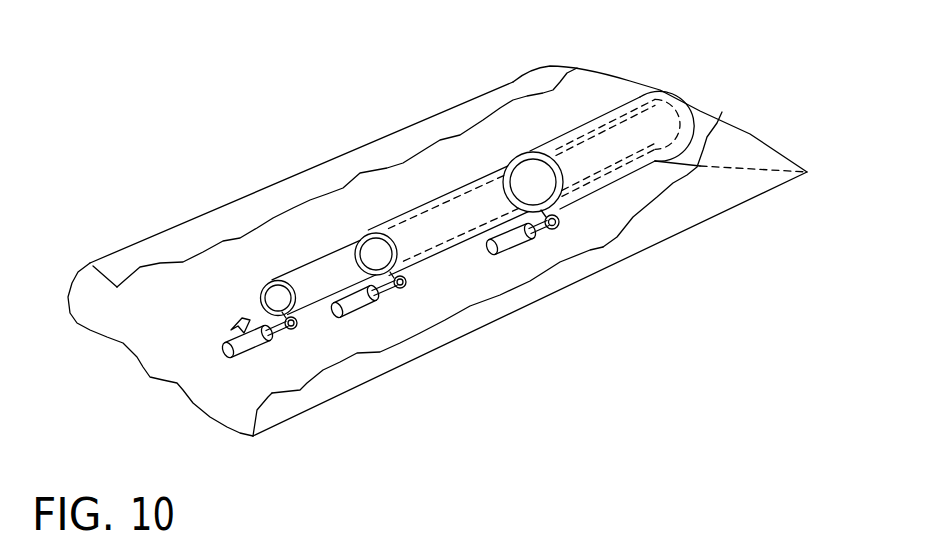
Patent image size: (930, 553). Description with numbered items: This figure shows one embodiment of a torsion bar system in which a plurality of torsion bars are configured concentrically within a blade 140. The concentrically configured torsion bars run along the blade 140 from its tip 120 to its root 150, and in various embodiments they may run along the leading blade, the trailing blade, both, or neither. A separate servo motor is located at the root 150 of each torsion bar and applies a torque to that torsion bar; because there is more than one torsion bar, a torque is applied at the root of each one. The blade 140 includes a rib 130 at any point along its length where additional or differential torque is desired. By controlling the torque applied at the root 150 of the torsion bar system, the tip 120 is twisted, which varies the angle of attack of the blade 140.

The tip 120 is at (660, 92).
The rib 130 is at (707, 121).
The blade 140 is at (458, 266).
The root 150 is at (167, 363).